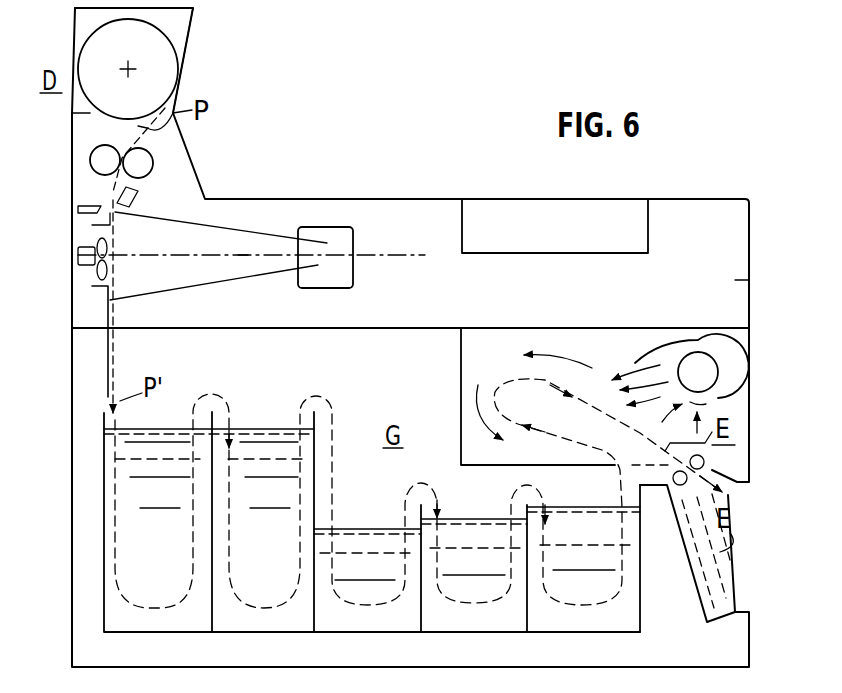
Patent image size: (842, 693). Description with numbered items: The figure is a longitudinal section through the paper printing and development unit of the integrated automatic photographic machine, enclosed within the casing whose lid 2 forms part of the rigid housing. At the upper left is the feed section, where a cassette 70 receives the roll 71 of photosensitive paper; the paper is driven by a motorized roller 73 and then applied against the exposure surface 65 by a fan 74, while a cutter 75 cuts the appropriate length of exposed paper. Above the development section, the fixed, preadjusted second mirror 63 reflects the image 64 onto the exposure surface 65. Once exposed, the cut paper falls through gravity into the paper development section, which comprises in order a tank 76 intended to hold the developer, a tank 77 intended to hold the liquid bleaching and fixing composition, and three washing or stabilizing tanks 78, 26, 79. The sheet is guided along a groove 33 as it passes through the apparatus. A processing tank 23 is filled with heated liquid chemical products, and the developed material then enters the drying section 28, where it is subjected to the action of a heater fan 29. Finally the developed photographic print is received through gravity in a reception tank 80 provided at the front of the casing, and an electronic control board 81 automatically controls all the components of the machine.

The lid 2 is at (70, 517).
The tank 23 is at (751, 288).
The washing or stabilizing tank 26 is at (455, 612).
The drying section 28 is at (734, 462).
The heater fan 29 is at (727, 380).
The groove 33 is at (113, 334).
The second mirror 63 is at (327, 243).
The image 64 is at (243, 255).
The exposure surface 65 is at (106, 302).
The cassette 70 is at (190, 24).
The roll 71 is at (165, 68).
The motorized roller 73 is at (143, 168).
The fan 74 is at (78, 252).
The cutter 75 is at (86, 197).
The tank 76 is at (153, 617).
The tank 77 is at (272, 615).
The washing or stabilizing tank 78 is at (104, 158).
The washing or stabilizing tank 79 is at (592, 617).
The reception tank 80 is at (727, 588).
The electronic control board 81 is at (548, 218).